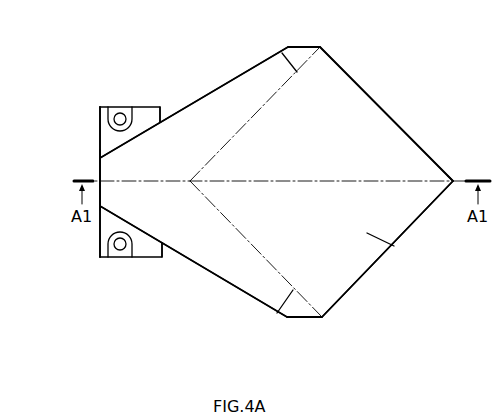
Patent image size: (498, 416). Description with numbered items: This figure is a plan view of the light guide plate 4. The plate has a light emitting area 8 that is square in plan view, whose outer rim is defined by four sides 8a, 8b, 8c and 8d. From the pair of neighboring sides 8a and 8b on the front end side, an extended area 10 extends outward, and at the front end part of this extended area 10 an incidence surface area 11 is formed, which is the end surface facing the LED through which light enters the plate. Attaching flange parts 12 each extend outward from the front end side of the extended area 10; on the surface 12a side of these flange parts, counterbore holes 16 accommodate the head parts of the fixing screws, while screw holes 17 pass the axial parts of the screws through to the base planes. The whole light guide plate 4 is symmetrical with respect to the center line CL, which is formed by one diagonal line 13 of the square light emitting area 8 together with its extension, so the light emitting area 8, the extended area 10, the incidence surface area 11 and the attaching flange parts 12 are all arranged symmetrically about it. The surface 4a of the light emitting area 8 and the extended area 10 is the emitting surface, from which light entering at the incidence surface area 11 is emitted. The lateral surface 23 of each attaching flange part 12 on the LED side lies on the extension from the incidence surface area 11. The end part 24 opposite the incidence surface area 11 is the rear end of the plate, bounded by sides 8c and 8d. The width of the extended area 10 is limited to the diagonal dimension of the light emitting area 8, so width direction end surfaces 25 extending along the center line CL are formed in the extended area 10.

The light guide plate 4 is at (227, 280).
The surface 4a is at (390, 247).
The light emitting area 8 is at (338, 90).
The side 8a is at (278, 314).
The side 8b is at (278, 52).
The side 8c is at (395, 122).
The side 8d is at (371, 264).
The extended area 10 is at (242, 74).
The incidence surface area 11 is at (100, 170).
The attaching flange part 12 is at (162, 104).
The surface 12a is at (160, 106).
The diagonal line 13 is at (398, 190).
The counterbore hole 16 is at (118, 112).
The screw hole 17 is at (100, 118).
The lateral surface 23 is at (100, 132).
The end part 24 is at (454, 179).
The width direction end surface 25 is at (316, 47).